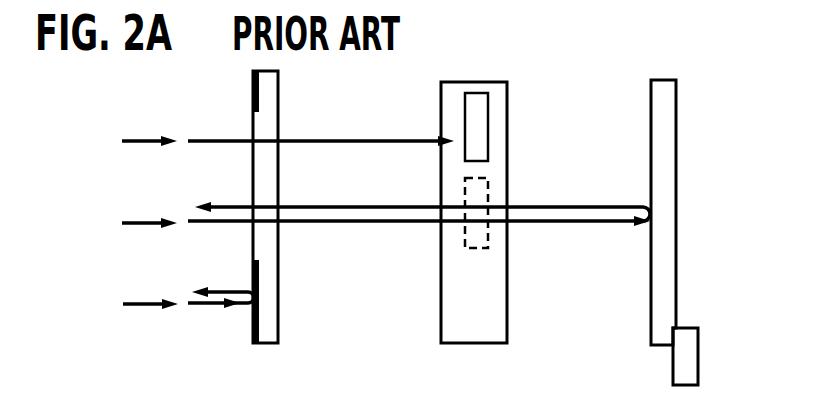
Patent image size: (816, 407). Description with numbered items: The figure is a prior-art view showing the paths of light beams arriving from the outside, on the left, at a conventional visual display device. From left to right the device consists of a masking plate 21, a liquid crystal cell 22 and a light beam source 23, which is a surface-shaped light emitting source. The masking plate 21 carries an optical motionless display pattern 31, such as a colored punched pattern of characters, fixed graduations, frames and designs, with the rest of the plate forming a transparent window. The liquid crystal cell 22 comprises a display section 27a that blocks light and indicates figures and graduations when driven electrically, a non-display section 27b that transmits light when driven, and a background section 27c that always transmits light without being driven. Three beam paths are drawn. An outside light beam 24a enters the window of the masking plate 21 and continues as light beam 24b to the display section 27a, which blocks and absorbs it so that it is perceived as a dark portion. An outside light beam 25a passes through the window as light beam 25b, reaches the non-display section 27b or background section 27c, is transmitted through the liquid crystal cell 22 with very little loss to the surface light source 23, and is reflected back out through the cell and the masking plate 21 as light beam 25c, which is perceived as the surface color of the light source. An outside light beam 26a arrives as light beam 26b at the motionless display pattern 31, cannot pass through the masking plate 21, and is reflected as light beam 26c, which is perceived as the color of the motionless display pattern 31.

The masking plate 21 is at (267, 343).
The liquid crystal cell 22 is at (472, 343).
The light beam source 23 is at (660, 345).
The light beam 24a is at (143, 140).
The light beam 24b is at (338, 140).
The light beam 25a is at (143, 222).
The light beam 25b is at (345, 223).
The light beam 25c is at (343, 207).
The light beam 26a is at (145, 303).
The light beam 26b is at (203, 310).
The reflected light beam 26c is at (223, 285).
The display section 27a is at (488, 108).
The non-display section 27b is at (488, 188).
The background section 27c is at (492, 282).
The motionless display pattern 31 is at (252, 323).